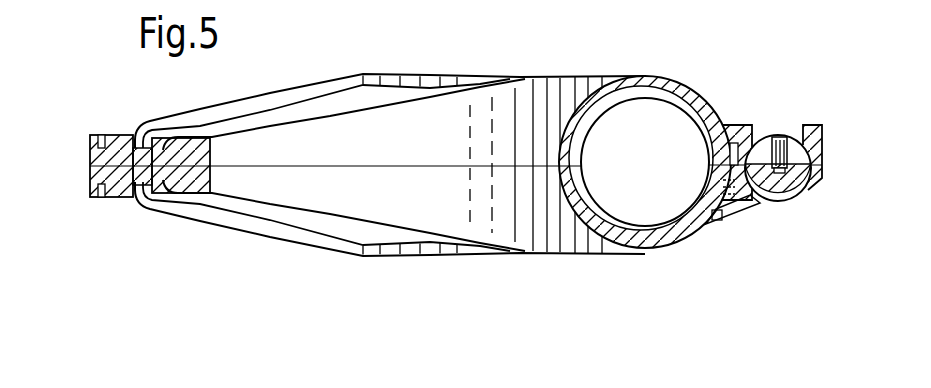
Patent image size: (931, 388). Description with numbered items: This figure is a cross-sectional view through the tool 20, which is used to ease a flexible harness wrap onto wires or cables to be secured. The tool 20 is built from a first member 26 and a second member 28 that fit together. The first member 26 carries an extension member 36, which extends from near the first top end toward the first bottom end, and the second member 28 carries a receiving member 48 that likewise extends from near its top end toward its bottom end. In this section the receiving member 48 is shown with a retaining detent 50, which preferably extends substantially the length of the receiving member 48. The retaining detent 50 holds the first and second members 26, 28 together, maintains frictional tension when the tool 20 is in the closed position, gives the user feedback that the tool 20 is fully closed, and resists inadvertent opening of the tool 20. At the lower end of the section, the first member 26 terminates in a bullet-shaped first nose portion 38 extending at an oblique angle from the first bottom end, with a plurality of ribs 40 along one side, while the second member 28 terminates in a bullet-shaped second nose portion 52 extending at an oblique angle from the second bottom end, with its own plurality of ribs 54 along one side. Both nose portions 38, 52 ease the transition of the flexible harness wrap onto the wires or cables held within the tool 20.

The tool 20 is at (437, 65).
The first member 26 is at (503, 207).
The second member 28 is at (473, 117).
The extension member 36 is at (775, 138).
The first nose portion 38 is at (90, 197).
The ribs 40 is at (297, 220).
The receiving member 48 is at (812, 178).
The retaining detent 50 is at (788, 138).
The second nose portion 52 is at (90, 143).
The ribs 54 is at (311, 112).